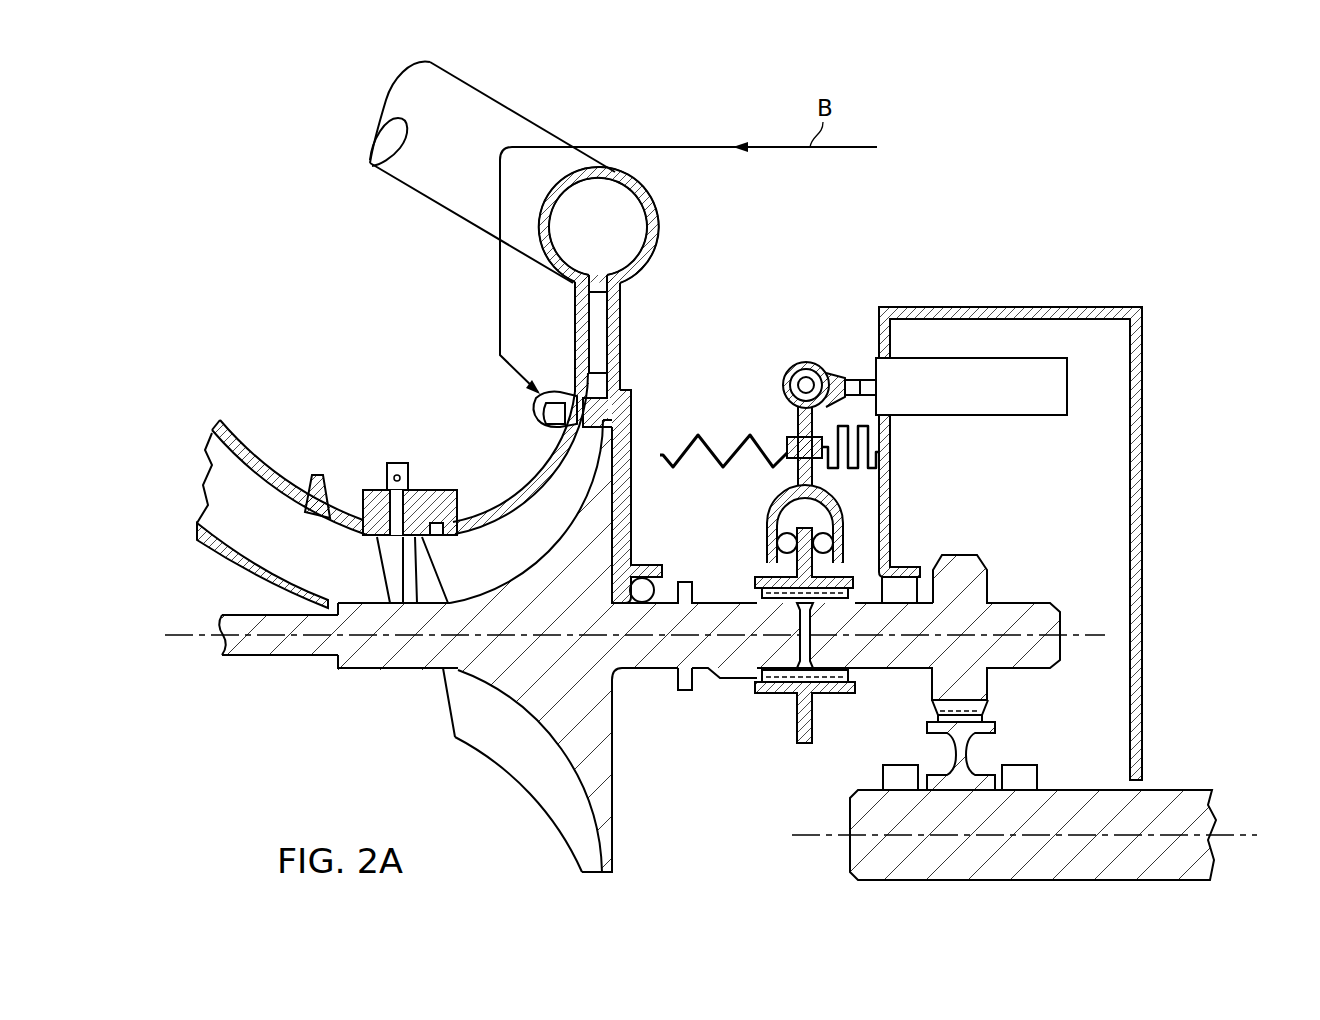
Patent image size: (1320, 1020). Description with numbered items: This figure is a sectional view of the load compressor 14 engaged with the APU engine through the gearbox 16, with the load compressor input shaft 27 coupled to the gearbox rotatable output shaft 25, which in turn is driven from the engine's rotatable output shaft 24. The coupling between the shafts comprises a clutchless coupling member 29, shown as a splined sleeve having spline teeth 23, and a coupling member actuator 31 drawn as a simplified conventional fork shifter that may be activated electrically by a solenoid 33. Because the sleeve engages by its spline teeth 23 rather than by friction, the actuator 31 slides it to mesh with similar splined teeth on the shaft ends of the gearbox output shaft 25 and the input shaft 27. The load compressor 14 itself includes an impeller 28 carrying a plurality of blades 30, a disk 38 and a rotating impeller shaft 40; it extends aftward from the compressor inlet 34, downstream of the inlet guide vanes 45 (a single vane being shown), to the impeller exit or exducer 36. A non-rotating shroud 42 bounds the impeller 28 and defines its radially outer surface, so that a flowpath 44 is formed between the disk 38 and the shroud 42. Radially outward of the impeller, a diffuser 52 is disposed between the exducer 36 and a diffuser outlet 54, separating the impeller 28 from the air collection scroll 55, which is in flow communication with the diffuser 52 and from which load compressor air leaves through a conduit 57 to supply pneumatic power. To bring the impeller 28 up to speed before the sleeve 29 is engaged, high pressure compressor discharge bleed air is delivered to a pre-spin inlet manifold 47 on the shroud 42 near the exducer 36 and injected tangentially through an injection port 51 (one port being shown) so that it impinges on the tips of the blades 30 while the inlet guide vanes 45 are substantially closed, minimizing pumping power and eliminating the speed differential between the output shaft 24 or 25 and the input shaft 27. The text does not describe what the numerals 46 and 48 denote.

The load compressor 14 is at (296, 282).
The gearbox 16 is at (1160, 430).
The spline teeth 23 is at (753, 598).
The rotatable output shaft 24 is at (1210, 814).
The gearbox rotatable output shaft 25 is at (900, 660).
The load compressor input shaft 27 is at (718, 613).
The impeller 28 is at (432, 646).
The clutchless coupling member 29 is at (770, 714).
The blades 30 is at (529, 762).
The coupling member actuator 31 is at (810, 352).
The solenoid 33 is at (957, 399).
The compressor inlet 34 is at (220, 486).
The impeller exit 36 is at (607, 390).
The disk 38 is at (562, 688).
The rotating impeller shaft 40 is at (288, 657).
The shroud 42 is at (517, 491).
The flowpath 44 is at (500, 557).
The inlet guide vanes 45 is at (378, 565).
The inlet shroud 46 is at (282, 482).
The pre-spin inlet manifold 47 is at (532, 410).
The impeller face 48 is at (552, 555).
The injection ports 51 is at (593, 422).
The diffuser 52 is at (602, 332).
The diffuser outlet 54 is at (620, 290).
The air collection scroll 55 is at (662, 226).
The conduit 57 is at (537, 116).